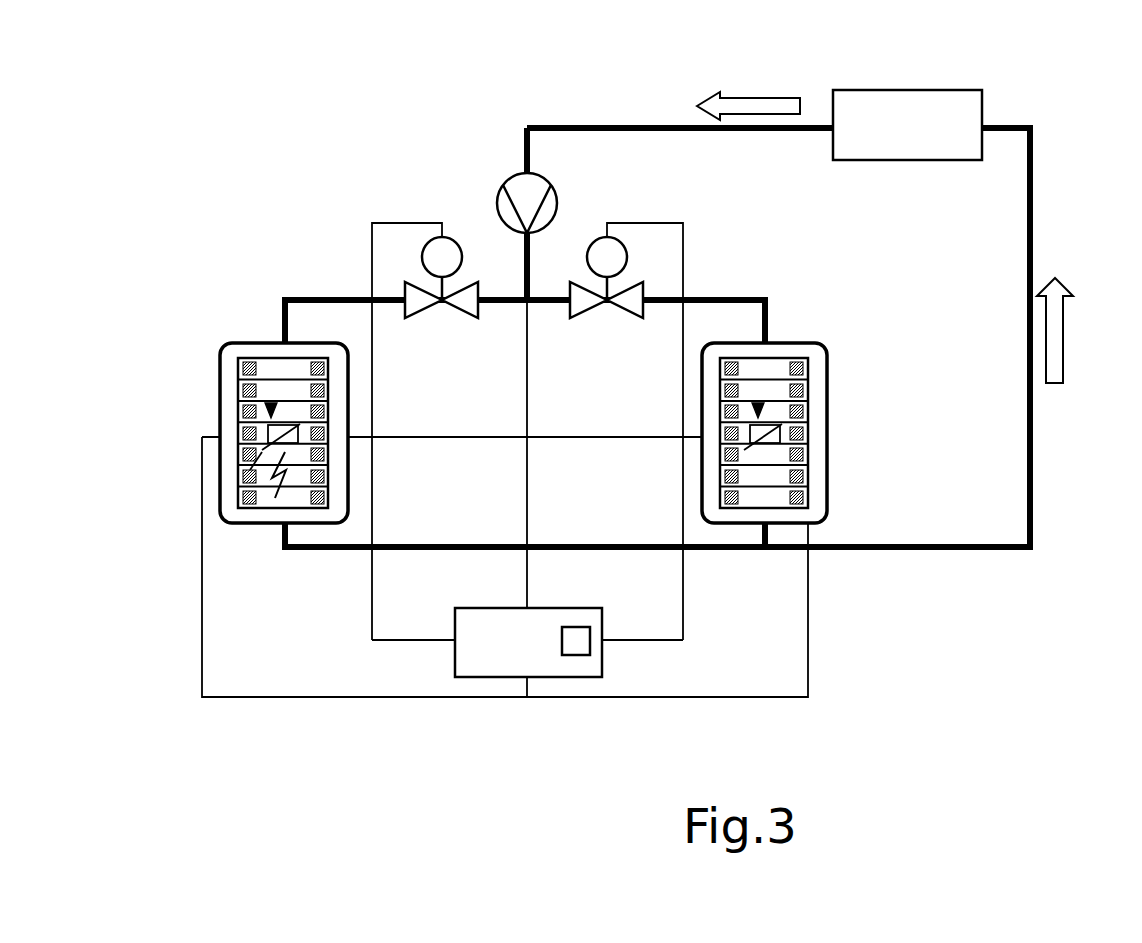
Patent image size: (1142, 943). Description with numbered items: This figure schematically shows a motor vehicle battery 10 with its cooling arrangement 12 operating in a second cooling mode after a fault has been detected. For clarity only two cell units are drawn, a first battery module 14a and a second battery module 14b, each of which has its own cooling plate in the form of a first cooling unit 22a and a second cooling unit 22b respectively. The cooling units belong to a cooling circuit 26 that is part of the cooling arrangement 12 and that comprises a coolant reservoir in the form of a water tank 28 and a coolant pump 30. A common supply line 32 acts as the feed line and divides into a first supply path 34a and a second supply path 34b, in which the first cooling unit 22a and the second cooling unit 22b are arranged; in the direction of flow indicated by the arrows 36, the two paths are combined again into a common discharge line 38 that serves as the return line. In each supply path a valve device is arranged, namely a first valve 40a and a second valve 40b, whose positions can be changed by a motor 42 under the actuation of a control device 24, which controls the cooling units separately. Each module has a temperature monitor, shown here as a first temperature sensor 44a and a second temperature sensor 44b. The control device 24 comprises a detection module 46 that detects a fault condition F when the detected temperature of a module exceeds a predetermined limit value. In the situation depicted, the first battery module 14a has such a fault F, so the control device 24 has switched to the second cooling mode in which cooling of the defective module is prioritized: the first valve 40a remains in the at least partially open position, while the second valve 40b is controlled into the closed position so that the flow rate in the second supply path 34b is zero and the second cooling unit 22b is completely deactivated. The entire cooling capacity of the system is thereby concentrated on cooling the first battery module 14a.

The motor vehicle battery 10 is at (342, 93).
The cooling arrangement 12 is at (365, 205).
The first battery module 14a is at (238, 400).
The second battery module 14b is at (815, 390).
The first cooling unit 22a is at (231, 413).
The second cooling unit 22b is at (837, 401).
The control device 24 is at (527, 642).
The cooling circuit 26 is at (626, 125).
The water tank 28 is at (907, 125).
The coolant pump 30 is at (540, 175).
The common supply line 32 is at (524, 246).
The first supply path 34a is at (315, 297).
The second supply path 34b is at (765, 297).
The arrows 36 is at (760, 95).
The common discharge line 38 is at (988, 550).
The first valve 40a is at (428, 312).
The second valve 40b is at (612, 312).
The motor 42 is at (422, 258).
The first temperature sensor 44a is at (245, 457).
The second temperature sensor 44b is at (805, 440).
The detection module 46 is at (563, 657).
The fault condition F is at (245, 508).